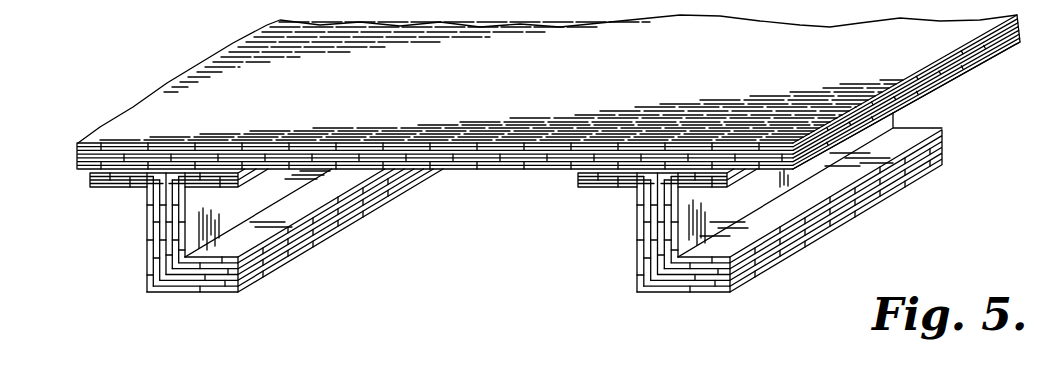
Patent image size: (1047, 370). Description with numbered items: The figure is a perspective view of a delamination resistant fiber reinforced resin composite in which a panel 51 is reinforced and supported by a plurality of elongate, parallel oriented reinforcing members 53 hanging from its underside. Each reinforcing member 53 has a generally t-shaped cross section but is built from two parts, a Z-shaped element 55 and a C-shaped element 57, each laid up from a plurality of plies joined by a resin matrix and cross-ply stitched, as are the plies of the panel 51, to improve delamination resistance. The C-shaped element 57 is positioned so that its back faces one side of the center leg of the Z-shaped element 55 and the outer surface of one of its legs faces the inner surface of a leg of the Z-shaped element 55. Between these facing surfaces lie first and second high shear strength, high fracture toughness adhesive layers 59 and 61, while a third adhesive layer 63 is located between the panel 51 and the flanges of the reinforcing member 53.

The panel 51 is at (517, 86).
The reinforcing members 53 is at (118, 272).
The Z-shaped element 55 is at (148, 234).
The C-shaped element 57 is at (284, 209).
The first adhesive layer 59 is at (167, 229).
The second adhesive layer 61 is at (203, 270).
The third adhesive layer 63 is at (113, 168).